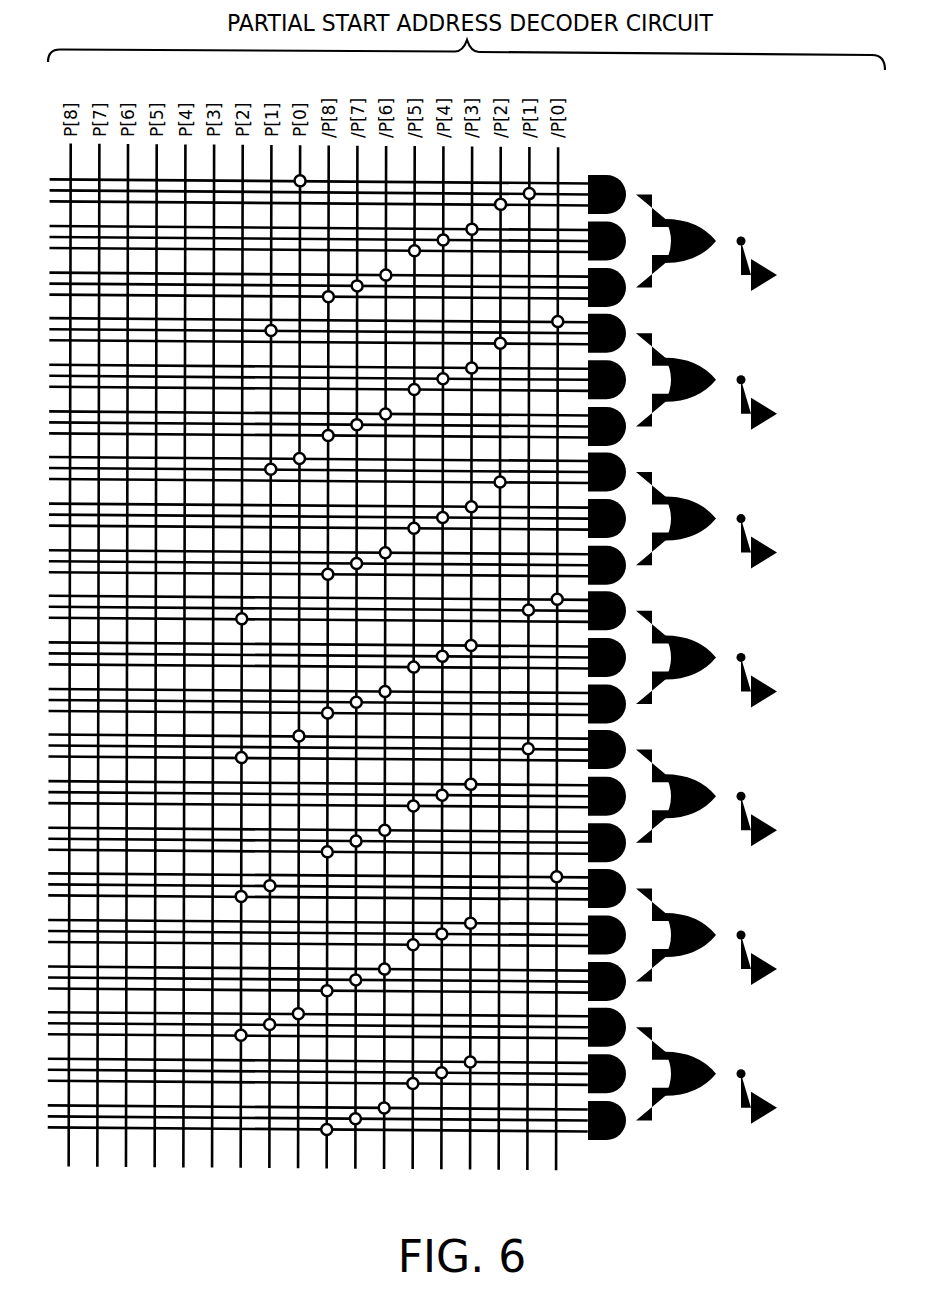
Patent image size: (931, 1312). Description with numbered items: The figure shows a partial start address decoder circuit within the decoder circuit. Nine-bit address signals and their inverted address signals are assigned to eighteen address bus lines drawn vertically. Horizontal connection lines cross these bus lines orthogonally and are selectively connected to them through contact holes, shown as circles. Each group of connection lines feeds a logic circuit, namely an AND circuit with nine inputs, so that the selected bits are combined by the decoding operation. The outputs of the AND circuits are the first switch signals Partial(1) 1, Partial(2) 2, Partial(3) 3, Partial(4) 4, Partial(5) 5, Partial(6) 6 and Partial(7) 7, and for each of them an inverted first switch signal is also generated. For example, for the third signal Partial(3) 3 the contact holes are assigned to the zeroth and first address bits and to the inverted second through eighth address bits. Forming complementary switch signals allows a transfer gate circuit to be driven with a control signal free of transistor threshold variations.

The first switch signal Partial 1 is at (734, 241).
The first switch signal Partial 2 is at (734, 380).
The first switch signal Partial 3 is at (734, 518).
The first switch signal Partial 4 is at (734, 657).
The first switch signal Partial 5 is at (734, 796).
The first switch signal Partial 6 is at (734, 935).
The first switch signal Partial 7 is at (734, 1074).